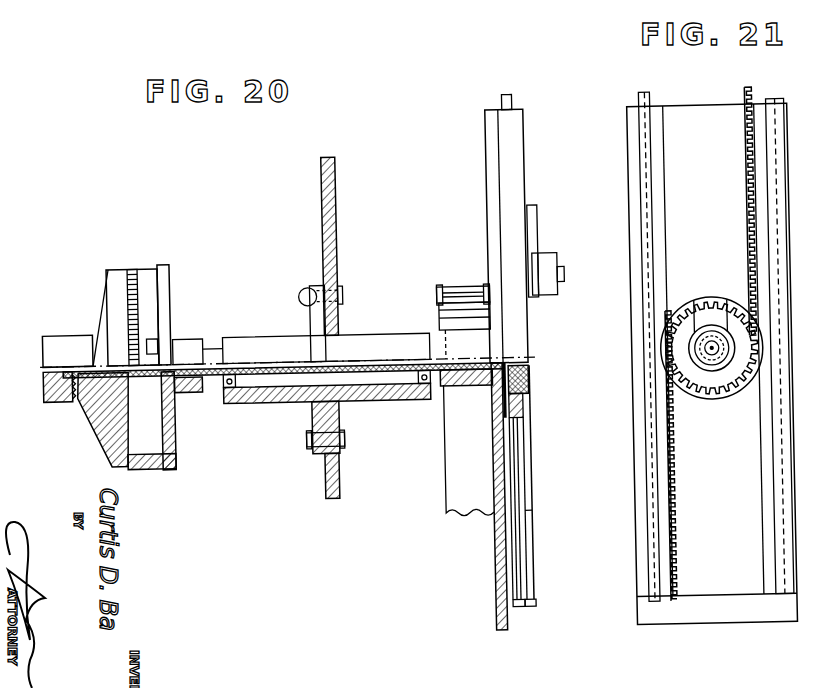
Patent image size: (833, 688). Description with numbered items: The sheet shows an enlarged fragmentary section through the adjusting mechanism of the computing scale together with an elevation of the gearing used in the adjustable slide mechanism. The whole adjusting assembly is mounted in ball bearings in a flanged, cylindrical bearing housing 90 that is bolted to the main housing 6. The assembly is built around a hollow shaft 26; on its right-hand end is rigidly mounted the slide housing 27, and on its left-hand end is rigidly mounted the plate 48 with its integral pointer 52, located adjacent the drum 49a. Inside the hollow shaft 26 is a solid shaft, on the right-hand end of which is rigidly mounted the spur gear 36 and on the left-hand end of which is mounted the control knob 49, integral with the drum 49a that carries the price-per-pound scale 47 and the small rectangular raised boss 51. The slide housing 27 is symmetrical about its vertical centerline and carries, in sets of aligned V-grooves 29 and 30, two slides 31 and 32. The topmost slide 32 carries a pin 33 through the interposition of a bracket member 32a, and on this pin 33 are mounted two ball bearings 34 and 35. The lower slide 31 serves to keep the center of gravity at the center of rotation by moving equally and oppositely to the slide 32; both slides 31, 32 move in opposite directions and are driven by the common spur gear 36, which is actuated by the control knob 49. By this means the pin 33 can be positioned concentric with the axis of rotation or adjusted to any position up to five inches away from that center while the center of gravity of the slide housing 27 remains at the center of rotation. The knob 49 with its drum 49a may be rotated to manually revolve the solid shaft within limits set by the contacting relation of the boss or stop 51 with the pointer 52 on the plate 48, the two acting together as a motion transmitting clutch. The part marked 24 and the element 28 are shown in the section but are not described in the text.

In FIG. 20, the housing 6 is at (338, 232).
In FIG. 20, the column bracket 24 is at (460, 289).
In FIG. 20, the hollow shaft 26 is at (257, 404).
In FIG. 20, the slide housing 27 is at (527, 152).
In FIG. 21, the slide housing 27 is at (720, 141).
In FIG. 20, the slide plate 28 is at (444, 312).
In FIG. 20, the V-groove 29 is at (517, 610).
In FIG. 20, the V-groove 30 is at (530, 610).
In FIG. 20, the lower slide 31 is at (522, 492).
In FIG. 21, the lower slide 31 is at (745, 170).
In FIG. 20, the slide 32 is at (536, 446).
In FIG. 21, the slide 32 is at (682, 528).
In FIG. 20, the bracket member 32a is at (535, 212).
In FIG. 21, the bracket member 32a is at (706, 302).
In FIG. 21, the pin 33 is at (716, 348).
In FIG. 20, the ball bearing 34 is at (550, 258).
In FIG. 20, the ball bearing 35 is at (566, 276).
In FIG. 21, the ball bearing 35 is at (692, 354).
In FIG. 20, the spur gear 36 is at (532, 379).
In FIG. 21, the spur gear 36 is at (713, 380).
In FIG. 20, the price-per-pound scale 47 is at (122, 265).
In FIG. 20, the plate 48 is at (172, 306).
In FIG. 20, the control knob 49 is at (61, 345).
In FIG. 20, the drum 49a is at (143, 478).
In FIG. 20, the raised boss 51 is at (160, 346).
In FIG. 20, the pointer 52 is at (152, 366).
In FIG. 20, the bearing housing 90 is at (300, 406).